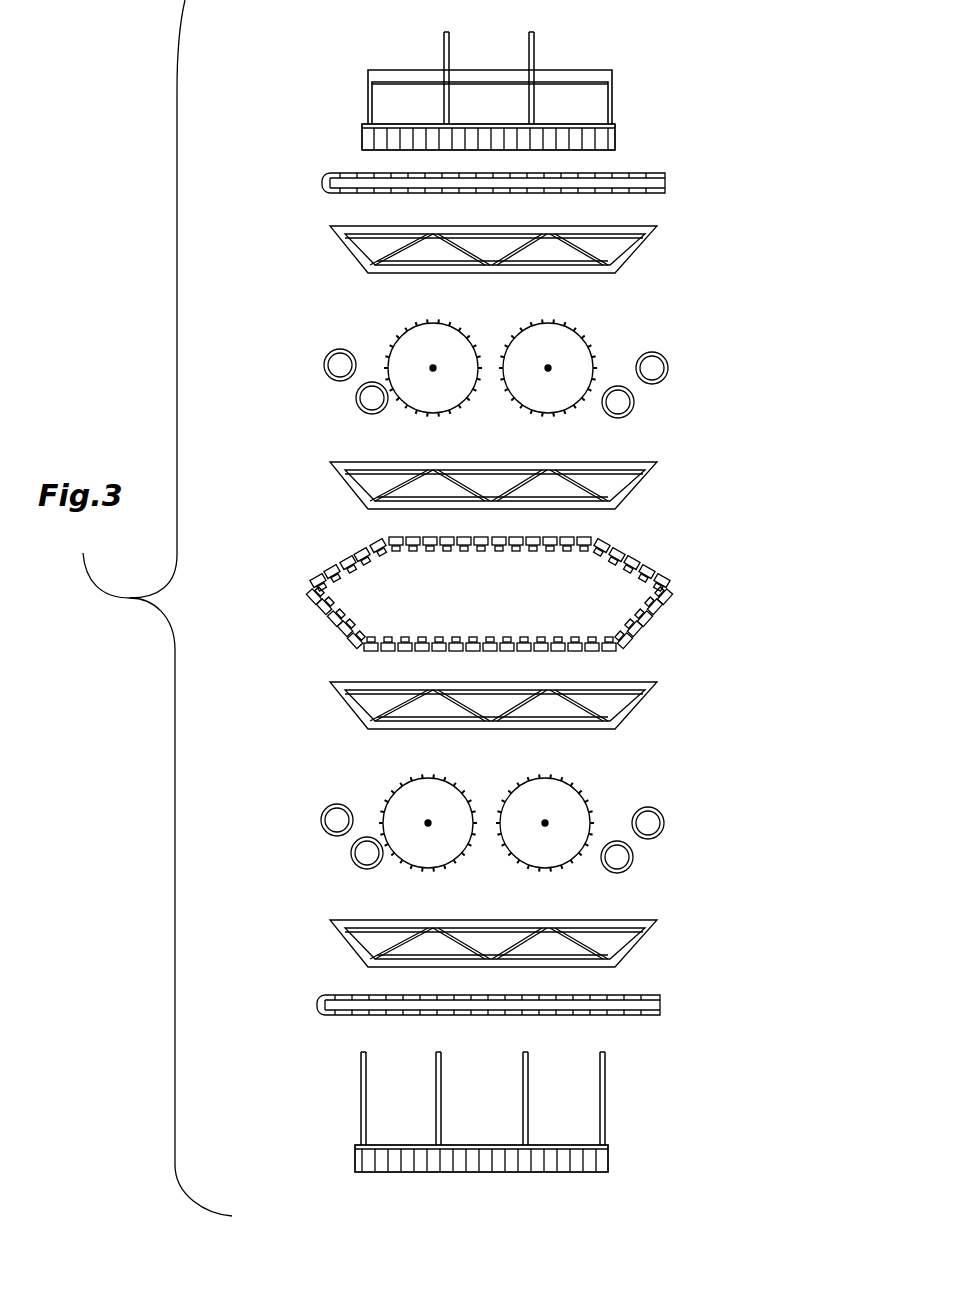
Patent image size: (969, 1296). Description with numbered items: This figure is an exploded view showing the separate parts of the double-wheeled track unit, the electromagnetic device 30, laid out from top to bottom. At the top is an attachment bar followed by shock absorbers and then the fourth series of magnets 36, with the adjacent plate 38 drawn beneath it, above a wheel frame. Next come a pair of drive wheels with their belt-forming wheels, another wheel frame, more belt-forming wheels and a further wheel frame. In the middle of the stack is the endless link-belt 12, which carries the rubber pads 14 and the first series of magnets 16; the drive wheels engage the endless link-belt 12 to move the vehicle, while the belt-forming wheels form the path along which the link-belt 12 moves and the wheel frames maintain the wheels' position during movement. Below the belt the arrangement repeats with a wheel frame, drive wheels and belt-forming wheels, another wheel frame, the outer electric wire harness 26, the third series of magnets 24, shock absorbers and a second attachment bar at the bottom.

The endless link-belt 12 is at (473, 587).
The rubber pads 14 is at (473, 587).
The first series of magnets 16 is at (622, 562).
The third series of magnets 24 is at (355, 1161).
The outer electric wire harness 26 is at (322, 996).
The electromagnetic device 30 is at (299, 625).
The fourth series of magnets 36 is at (615, 150).
The upper plate 38 is at (325, 181).